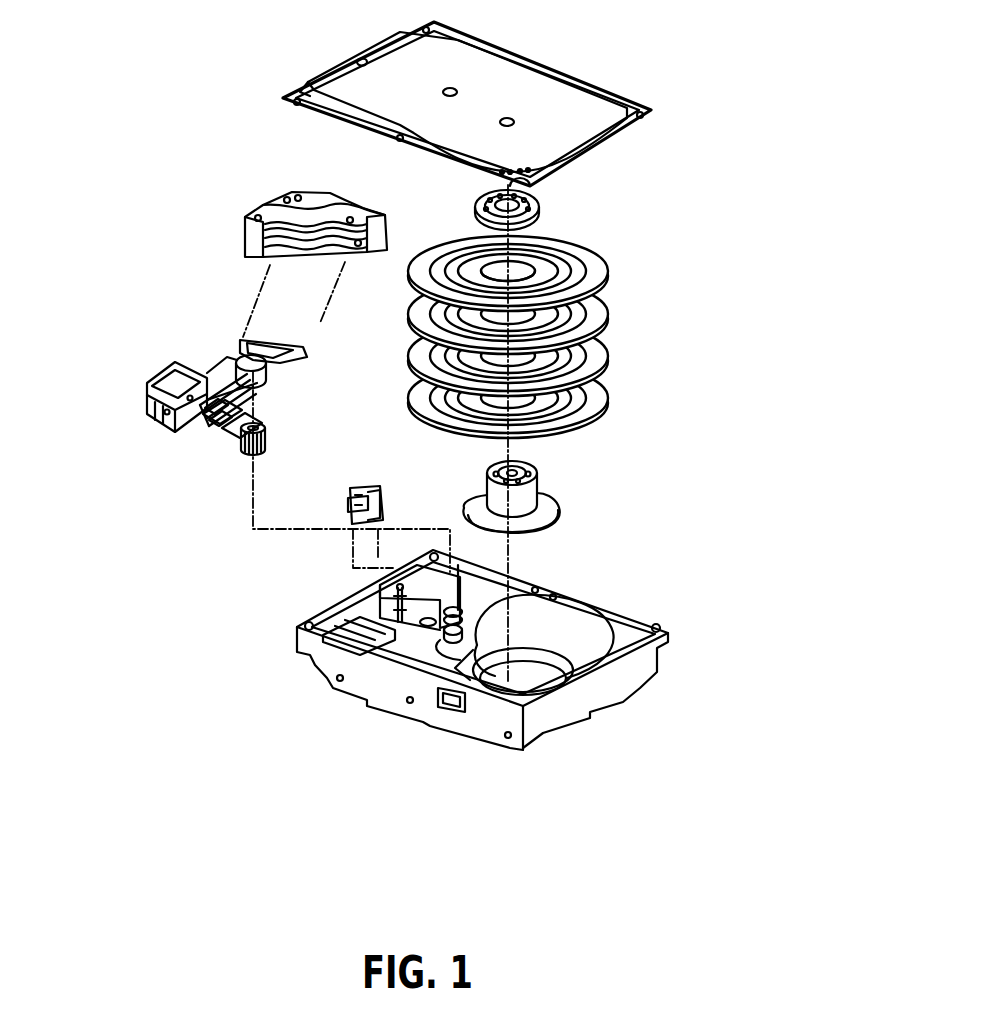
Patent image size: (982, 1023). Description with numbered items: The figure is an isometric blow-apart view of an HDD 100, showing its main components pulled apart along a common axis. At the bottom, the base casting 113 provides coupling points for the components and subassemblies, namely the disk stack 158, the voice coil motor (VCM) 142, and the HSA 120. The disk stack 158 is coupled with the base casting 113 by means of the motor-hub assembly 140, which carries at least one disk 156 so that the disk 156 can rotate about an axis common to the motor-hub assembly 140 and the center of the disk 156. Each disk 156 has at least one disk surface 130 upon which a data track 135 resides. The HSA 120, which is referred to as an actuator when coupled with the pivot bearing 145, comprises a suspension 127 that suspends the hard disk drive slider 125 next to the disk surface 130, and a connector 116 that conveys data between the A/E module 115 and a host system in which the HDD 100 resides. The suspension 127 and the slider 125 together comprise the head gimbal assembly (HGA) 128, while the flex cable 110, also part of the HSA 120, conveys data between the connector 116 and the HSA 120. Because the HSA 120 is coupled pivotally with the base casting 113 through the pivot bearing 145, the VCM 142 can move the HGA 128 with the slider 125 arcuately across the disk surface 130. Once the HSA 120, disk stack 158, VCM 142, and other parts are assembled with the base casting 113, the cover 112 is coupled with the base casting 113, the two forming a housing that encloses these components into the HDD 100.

The HDD 100 is at (658, 738).
The flex cable 110 is at (207, 393).
The cover 112 is at (550, 112).
The base casting 113 is at (312, 647).
The A/E module 115 is at (238, 362).
The connector 116 is at (173, 397).
The HSA 120 is at (176, 390).
The hard disk drive slider 125 is at (213, 420).
The suspension 127 is at (163, 380).
The head gimbal assembly (HGA) 128 is at (233, 423).
The disk surface 130 is at (533, 310).
The data track 135 is at (462, 247).
The motor-hub assembly 140 is at (560, 505).
The voice coil motor (VCM) 142 is at (232, 202).
The pivot bearing 145 is at (248, 455).
The disk 156 is at (412, 268).
The disk stack 158 is at (659, 448).